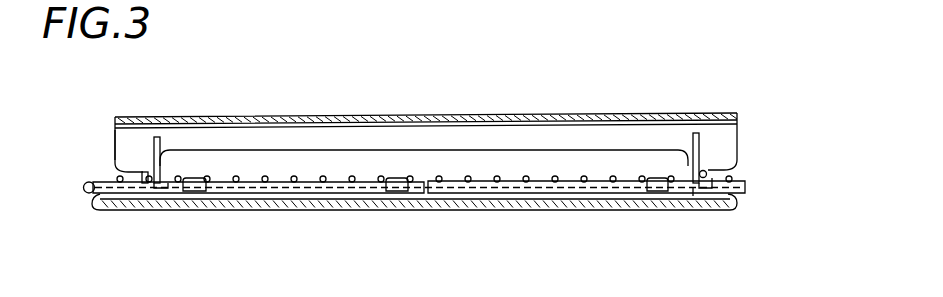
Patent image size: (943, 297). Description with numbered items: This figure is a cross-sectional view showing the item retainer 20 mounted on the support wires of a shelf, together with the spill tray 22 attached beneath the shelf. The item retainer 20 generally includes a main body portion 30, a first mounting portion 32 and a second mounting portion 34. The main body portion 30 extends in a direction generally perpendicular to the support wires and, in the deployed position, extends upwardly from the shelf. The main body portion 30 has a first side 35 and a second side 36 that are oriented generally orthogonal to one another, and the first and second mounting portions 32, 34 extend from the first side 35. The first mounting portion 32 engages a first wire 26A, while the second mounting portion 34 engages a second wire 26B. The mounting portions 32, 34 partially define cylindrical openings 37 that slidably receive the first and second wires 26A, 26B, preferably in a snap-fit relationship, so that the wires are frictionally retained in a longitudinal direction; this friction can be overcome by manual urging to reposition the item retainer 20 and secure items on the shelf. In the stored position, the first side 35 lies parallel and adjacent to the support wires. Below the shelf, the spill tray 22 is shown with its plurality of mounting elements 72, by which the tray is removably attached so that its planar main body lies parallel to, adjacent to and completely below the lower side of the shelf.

The item retainer 20 is at (553, 112).
The spill tray 22 is at (312, 208).
The first wire 26A is at (148, 148).
The second wire 26B is at (704, 140).
The main body portion 30 is at (257, 114).
The first mounting portion 32 is at (152, 192).
The second mounting portion 34 is at (704, 197).
The first side 35 is at (128, 147).
The second side 36 is at (298, 115).
The cylindrical openings 37 is at (143, 185).
The mounting elements 72 is at (190, 178).